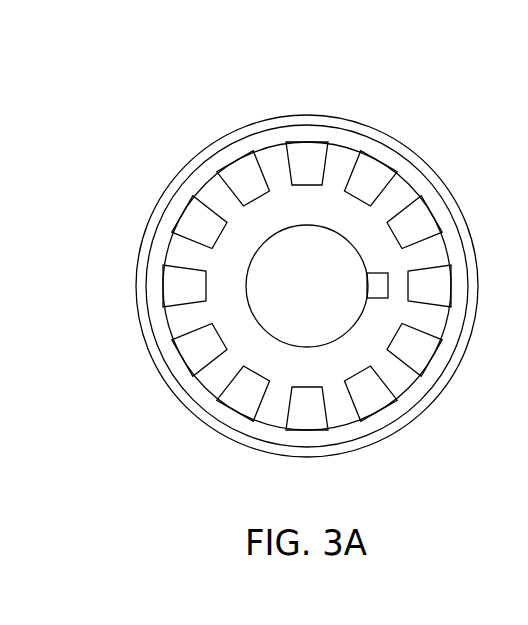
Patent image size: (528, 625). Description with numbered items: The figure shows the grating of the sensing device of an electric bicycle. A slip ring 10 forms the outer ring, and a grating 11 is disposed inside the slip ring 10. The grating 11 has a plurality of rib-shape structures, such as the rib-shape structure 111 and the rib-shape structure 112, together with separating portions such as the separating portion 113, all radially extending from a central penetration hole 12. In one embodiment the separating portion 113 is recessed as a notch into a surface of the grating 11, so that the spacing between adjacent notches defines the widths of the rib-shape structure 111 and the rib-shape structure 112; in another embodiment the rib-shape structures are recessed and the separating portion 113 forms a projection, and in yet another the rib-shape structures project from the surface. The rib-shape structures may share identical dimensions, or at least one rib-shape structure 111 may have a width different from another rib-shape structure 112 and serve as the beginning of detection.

The slip ring 10 is at (165, 347).
The grating 11 is at (363, 350).
The rib-shape structure 111 is at (342, 158).
The rib-shape structure 112 is at (397, 192).
The separating portion 113 is at (365, 167).
The penetration hole 12 is at (282, 282).